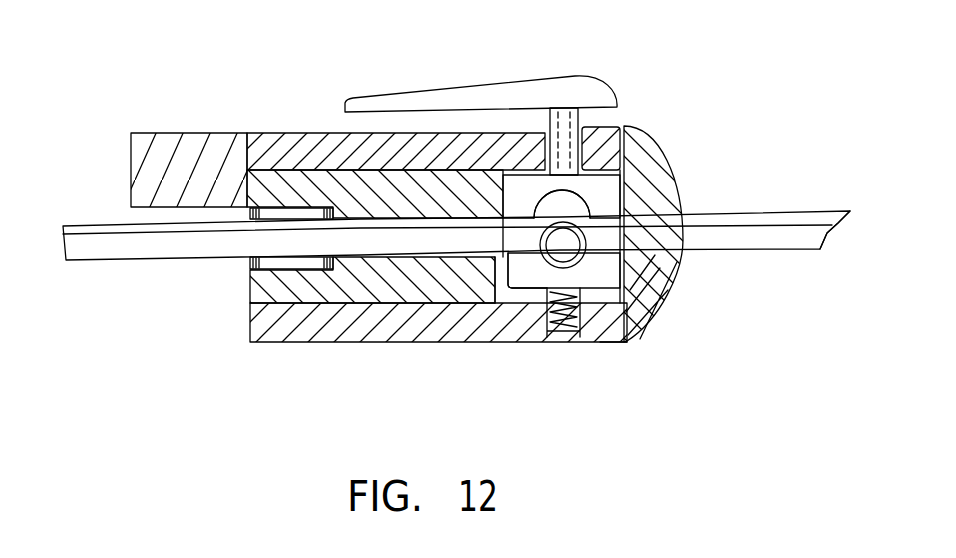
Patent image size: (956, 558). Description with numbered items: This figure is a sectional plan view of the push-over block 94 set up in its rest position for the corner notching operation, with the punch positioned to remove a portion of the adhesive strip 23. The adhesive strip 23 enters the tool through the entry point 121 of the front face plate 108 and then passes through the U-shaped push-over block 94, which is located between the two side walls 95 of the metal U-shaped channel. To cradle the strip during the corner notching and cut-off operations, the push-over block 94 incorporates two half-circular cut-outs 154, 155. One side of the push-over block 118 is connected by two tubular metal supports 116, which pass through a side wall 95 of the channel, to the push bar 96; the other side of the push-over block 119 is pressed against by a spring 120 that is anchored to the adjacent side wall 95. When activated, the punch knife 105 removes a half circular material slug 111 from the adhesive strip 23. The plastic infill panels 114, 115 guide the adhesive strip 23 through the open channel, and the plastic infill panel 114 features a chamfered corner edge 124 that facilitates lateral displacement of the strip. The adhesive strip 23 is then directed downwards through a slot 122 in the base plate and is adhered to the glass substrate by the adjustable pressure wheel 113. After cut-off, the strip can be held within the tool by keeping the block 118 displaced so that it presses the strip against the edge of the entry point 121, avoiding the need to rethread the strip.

The adhesive strip 23 is at (153, 248).
The push-over block 94 is at (653, 313).
The side walls 95 is at (283, 148).
The push bar 96 is at (452, 100).
The punch knife 105 is at (537, 257).
The front face plate 108 is at (653, 293).
The half circular material slug 111 is at (575, 243).
The adjustable pressure wheel 113 is at (250, 270).
The plastic infill panel 114 is at (460, 280).
The plastic infill panel 115 is at (337, 158).
The tubular metal supports 116 is at (560, 110).
The side of the push-over block 118 is at (587, 183).
The other side of the push-over block 119 is at (640, 340).
The spring 120 is at (555, 331).
The entry point 121 is at (670, 257).
The slot 122 is at (360, 240).
The chamfered corner edge 124 is at (493, 260).
The half-circular cut-out 154 is at (590, 182).
The half-circular cut-out 155 is at (608, 267).